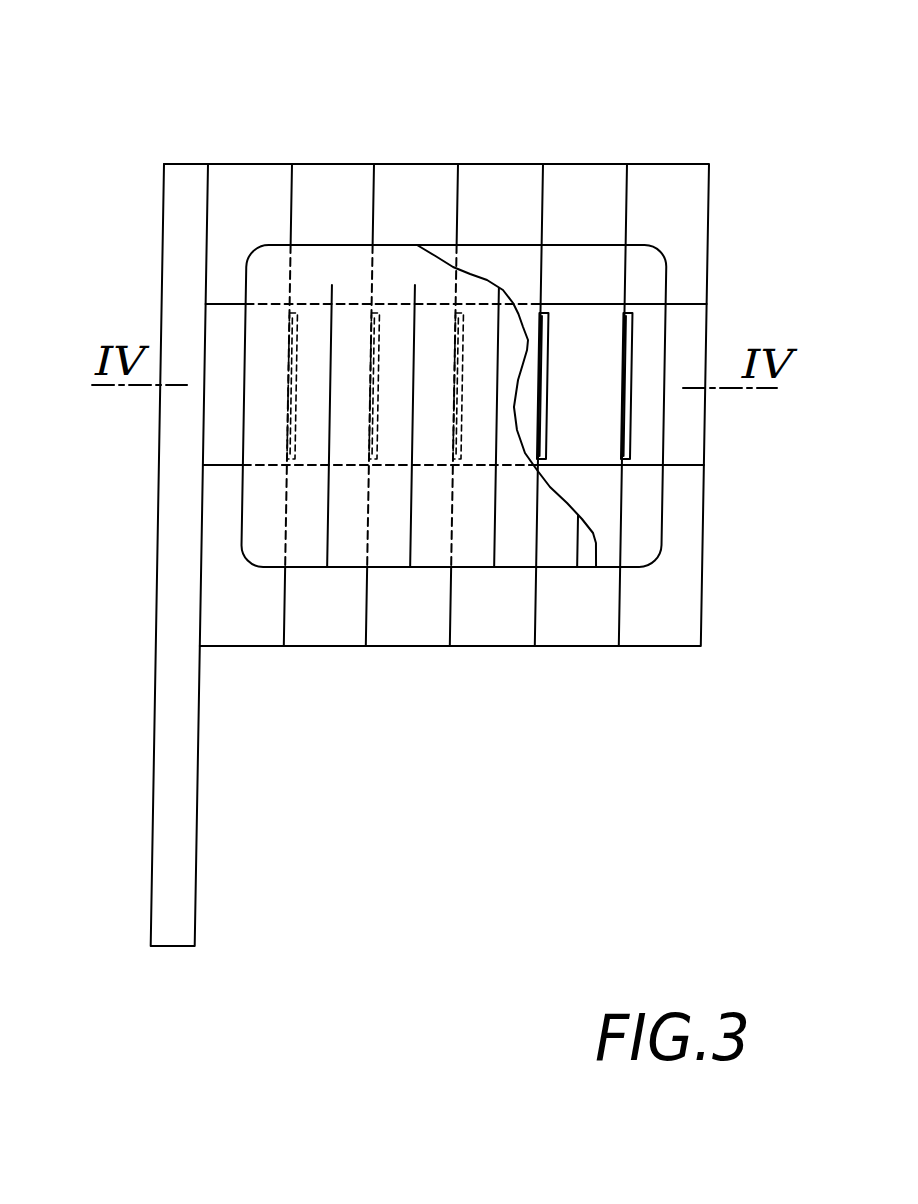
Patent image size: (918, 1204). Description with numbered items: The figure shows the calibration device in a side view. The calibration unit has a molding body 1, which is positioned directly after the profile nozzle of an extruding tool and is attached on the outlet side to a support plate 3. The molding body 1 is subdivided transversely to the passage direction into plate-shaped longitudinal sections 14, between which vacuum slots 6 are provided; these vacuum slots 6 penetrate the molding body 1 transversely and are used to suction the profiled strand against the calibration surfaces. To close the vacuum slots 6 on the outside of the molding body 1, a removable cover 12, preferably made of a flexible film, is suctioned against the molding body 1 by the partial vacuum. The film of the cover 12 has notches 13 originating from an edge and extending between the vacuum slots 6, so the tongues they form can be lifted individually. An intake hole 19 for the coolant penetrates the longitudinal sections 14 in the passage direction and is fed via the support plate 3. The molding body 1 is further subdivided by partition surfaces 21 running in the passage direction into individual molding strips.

The molding body 1 is at (664, 150).
The support plate 3 is at (187, 862).
The vacuum slots 6 is at (551, 340).
The cover 12 is at (268, 508).
The notches 13 is at (332, 493).
The longitudinal sections 14 is at (413, 197).
The intake hole 19 is at (574, 303).
The partition surfaces 21 is at (645, 470).